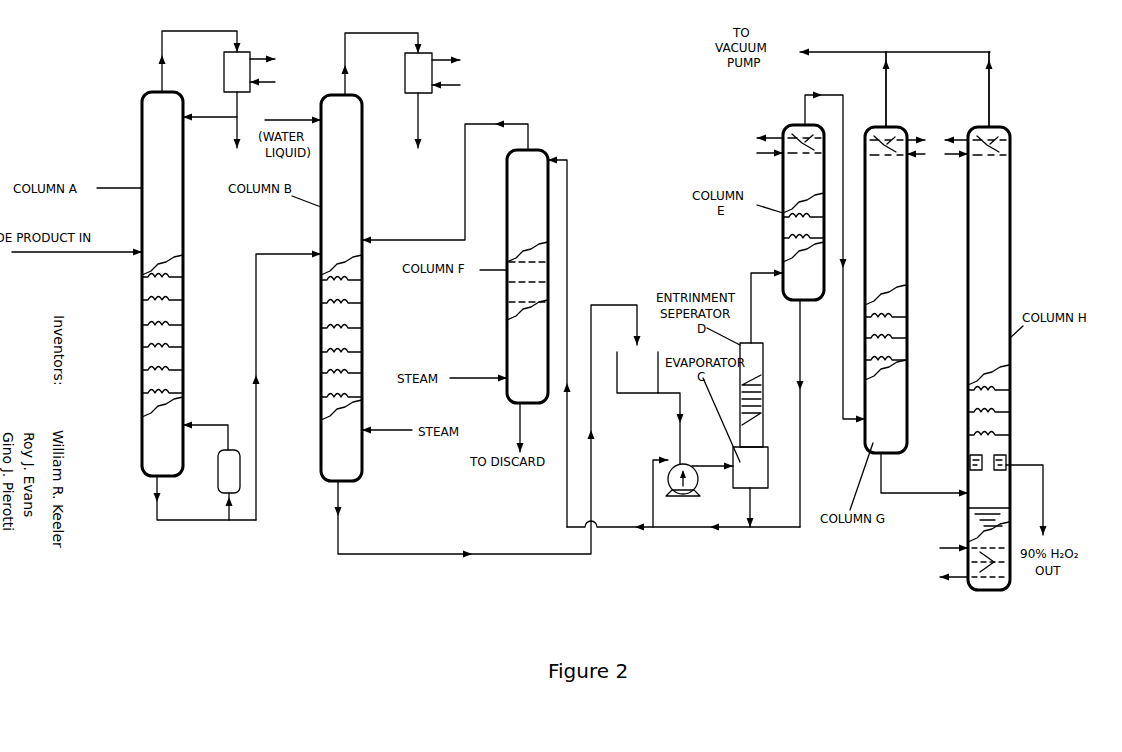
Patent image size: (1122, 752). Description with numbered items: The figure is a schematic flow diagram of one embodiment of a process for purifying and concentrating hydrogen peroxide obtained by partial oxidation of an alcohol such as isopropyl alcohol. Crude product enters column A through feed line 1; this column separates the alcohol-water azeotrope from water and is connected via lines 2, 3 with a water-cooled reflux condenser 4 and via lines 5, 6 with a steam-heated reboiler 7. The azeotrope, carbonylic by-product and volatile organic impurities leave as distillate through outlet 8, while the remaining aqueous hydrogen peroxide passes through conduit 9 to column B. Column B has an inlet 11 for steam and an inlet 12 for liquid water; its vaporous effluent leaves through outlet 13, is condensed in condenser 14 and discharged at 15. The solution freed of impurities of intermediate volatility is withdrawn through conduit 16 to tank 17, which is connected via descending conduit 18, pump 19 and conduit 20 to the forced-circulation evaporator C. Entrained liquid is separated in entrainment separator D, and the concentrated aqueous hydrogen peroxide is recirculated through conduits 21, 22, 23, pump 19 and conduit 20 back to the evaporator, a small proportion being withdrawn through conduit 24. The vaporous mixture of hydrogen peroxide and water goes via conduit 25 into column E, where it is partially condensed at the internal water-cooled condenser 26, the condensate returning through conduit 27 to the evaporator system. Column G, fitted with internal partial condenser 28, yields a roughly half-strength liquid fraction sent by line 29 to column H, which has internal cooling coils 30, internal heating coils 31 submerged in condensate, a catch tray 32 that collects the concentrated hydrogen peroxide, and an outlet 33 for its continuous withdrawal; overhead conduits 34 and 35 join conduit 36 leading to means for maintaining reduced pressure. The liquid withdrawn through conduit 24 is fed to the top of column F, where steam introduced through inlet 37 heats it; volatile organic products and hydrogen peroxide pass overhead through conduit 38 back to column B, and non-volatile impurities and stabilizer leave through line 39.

The feed line 1 is at (107, 252).
The line 2 is at (190, 31).
The line 3 is at (221, 117).
The water-cooled reflux condenser 4 is at (224, 61).
The line 5 is at (178, 520).
The line 6 is at (200, 420).
The steam-heated reboiler 7 is at (218, 466).
The outlet 8 is at (235, 128).
The conduit 9 is at (257, 330).
The inlet for steam 11 is at (398, 430).
The inlet for liquid water 12 is at (305, 119).
The outlet 13 is at (365, 33).
The condenser 14 is at (405, 61).
The discharge 15 is at (418, 137).
The conduit 16 is at (392, 554).
The tank 17 is at (642, 395).
The descending conduit 18 is at (679, 409).
The pump 19 is at (698, 483).
The conduit 20 is at (712, 458).
The conduit 21 is at (751, 506).
The conduit 22 is at (727, 529).
The conduit 23 is at (656, 523).
The conduit 24 is at (618, 523).
The conduit 25 is at (758, 273).
The internal water-cooled condenser 26 is at (801, 124).
The conduit 27 is at (800, 430).
The internal partial condenser 28 is at (880, 127).
The line 29 is at (898, 493).
The internal cooling coils 30 is at (984, 127).
The internal heating coils 31 is at (975, 588).
The catch tray 32 is at (1008, 462).
The outlet 33 is at (1043, 498).
The overhead conduit 34 is at (895, 73).
The overhead conduit 35 is at (998, 73).
The conduit 36 is at (856, 52).
The inlet 37 is at (483, 371).
The conduit 38 is at (483, 124).
The line 39 is at (520, 425).